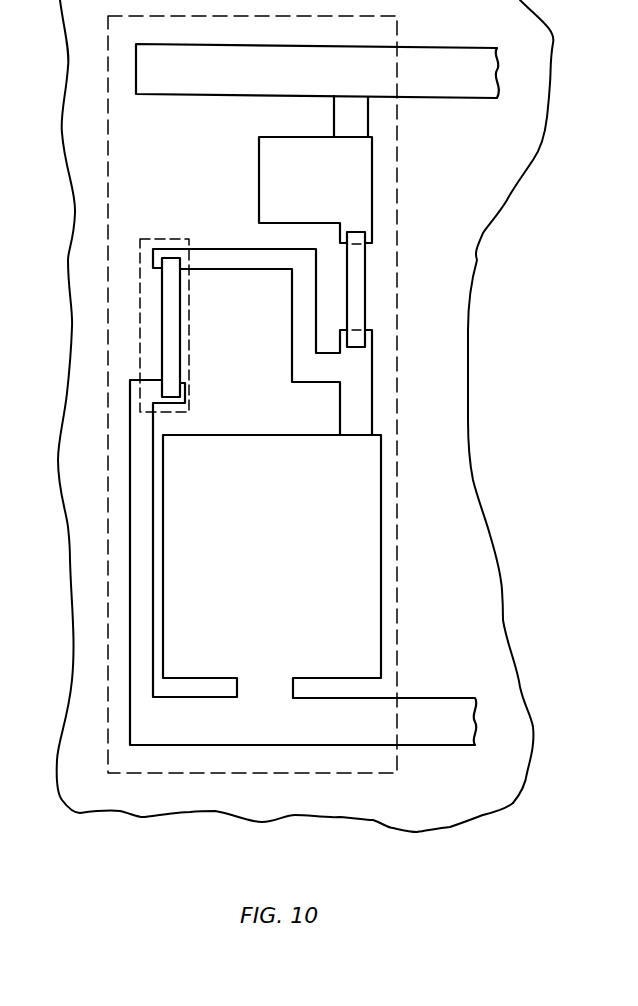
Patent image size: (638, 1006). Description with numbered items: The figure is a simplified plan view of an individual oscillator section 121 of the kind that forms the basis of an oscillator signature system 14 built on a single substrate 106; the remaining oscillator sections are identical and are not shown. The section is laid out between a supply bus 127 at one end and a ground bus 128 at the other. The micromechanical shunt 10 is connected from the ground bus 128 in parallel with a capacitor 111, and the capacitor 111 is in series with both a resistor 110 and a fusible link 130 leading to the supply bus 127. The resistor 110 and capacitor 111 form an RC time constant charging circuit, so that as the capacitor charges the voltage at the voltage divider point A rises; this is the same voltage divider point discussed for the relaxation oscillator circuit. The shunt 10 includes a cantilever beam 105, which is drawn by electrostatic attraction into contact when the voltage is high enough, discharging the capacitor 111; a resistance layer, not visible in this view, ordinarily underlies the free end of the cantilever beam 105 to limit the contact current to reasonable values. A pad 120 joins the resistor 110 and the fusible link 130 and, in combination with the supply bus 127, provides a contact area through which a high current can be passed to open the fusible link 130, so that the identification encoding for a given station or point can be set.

The micromechanical shunt 10 is at (139, 323).
The oscillator signature system 14 is at (479, 416).
The cantilever beam 105 is at (170, 349).
The substrate 106 is at (85, 822).
The resistor 110 is at (352, 292).
The capacitor 111 is at (360, 575).
The pad 120 is at (347, 192).
The oscillator section 121 is at (373, 773).
The supply bus 127 is at (478, 62).
The ground bus 128 is at (425, 712).
The fusible link 130 is at (368, 118).
The voltage divider point A is at (362, 364).